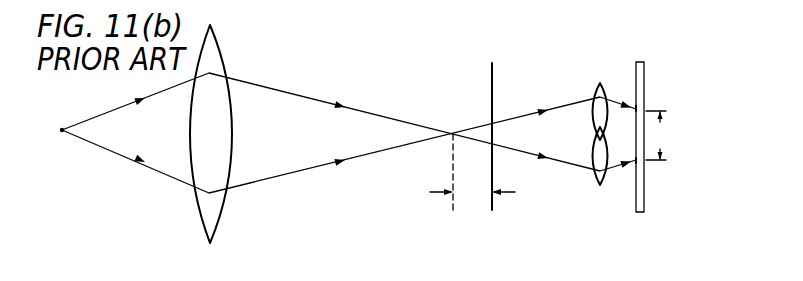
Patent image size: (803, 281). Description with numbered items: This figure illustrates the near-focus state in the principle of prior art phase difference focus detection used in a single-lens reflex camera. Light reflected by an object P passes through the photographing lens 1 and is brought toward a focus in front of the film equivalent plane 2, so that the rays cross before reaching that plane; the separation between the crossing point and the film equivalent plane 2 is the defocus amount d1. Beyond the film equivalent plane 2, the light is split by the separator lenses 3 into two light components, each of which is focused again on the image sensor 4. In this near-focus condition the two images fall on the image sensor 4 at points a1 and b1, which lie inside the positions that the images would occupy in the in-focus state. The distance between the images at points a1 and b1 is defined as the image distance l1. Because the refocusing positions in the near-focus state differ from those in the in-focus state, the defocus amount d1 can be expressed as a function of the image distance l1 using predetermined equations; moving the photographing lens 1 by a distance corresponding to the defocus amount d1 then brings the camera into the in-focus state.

The photographing lens 1 is at (213, 43).
The film equivalent plane 2 is at (493, 72).
The separator lenses 3 is at (597, 92).
The image sensor 4 is at (637, 62).
The object P is at (63, 125).
The near-focus image point a1 is at (633, 107).
The near-focus image point b1 is at (633, 161).
The defocus amount d1 is at (472, 172).
The image distance l1 is at (658, 135).